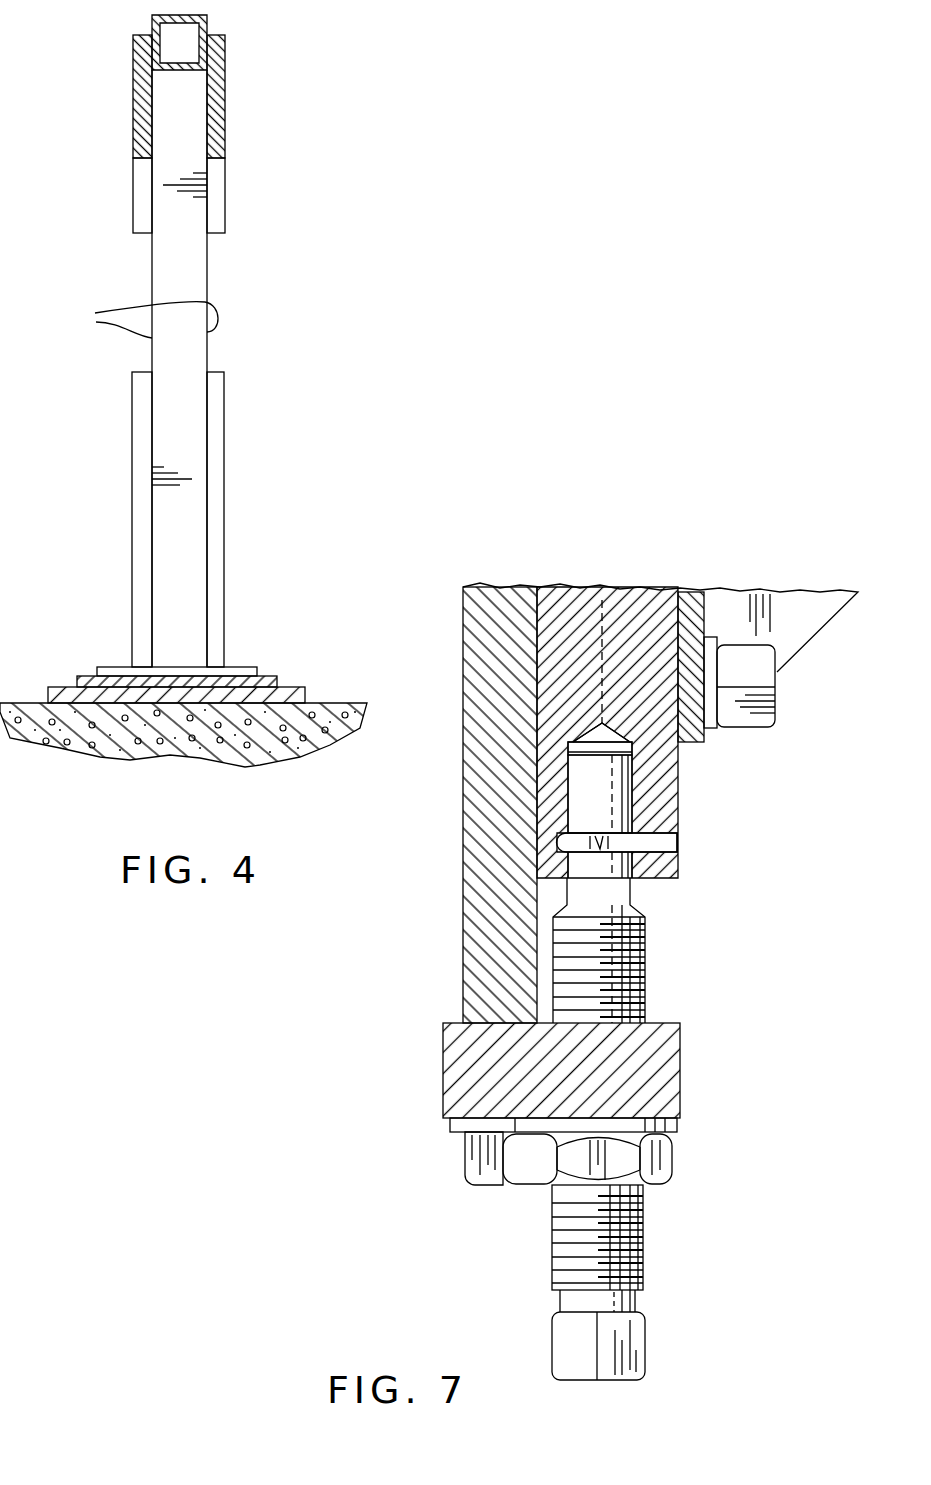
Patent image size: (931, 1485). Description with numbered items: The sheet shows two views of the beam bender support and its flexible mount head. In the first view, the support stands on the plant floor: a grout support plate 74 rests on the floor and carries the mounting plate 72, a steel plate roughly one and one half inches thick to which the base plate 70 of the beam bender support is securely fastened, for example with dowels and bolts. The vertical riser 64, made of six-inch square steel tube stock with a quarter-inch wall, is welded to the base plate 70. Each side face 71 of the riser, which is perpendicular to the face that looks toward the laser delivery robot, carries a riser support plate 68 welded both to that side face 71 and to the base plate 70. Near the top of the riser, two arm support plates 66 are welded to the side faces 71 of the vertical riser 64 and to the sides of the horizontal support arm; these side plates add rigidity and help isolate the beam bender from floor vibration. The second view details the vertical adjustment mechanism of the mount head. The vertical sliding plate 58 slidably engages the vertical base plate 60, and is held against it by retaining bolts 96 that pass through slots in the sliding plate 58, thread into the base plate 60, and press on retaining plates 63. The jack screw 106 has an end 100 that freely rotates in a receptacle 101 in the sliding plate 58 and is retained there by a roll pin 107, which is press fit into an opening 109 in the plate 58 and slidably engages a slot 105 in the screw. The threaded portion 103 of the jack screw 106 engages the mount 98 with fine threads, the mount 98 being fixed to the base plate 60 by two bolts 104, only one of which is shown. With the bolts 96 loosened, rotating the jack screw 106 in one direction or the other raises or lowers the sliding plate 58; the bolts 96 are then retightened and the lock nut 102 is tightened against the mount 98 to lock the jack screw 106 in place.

In FIG. 7, the vertical sliding plate 58 is at (631, 610).
In FIG. 7, the vertical base plate 60 is at (462, 928).
In FIG. 7, the retaining plate 63 is at (690, 613).
In FIG. 4, the vertical riser 64 is at (180, 271).
In FIG. 4, the arm support plate 66 is at (140, 180).
In FIG. 4, the riser support plate 68 is at (216, 437).
In FIG. 4, the base plate 70 is at (238, 672).
In FIG. 4, the side face 71 is at (140, 320).
In FIG. 4, the mounting plate 72 is at (95, 680).
In FIG. 4, the grout support plate 74 is at (300, 688).
In FIG. 7, the retaining bolt 96 is at (745, 722).
In FIG. 7, the mount 98 is at (660, 1052).
In FIG. 7, the end 100 is at (600, 800).
In FIG. 7, the receptacle 101 is at (613, 732).
In FIG. 7, the lock nut 102 is at (663, 1148).
In FIG. 7, the threaded portion 103 is at (643, 1249).
In FIG. 7, the bolt 104 is at (517, 1178).
In FIG. 7, the slot 105 is at (607, 850).
In FIG. 7, the jack screw 106 is at (635, 1333).
In FIG. 7, the roll pin 107 is at (677, 843).
In FIG. 7, the opening 109 is at (678, 860).